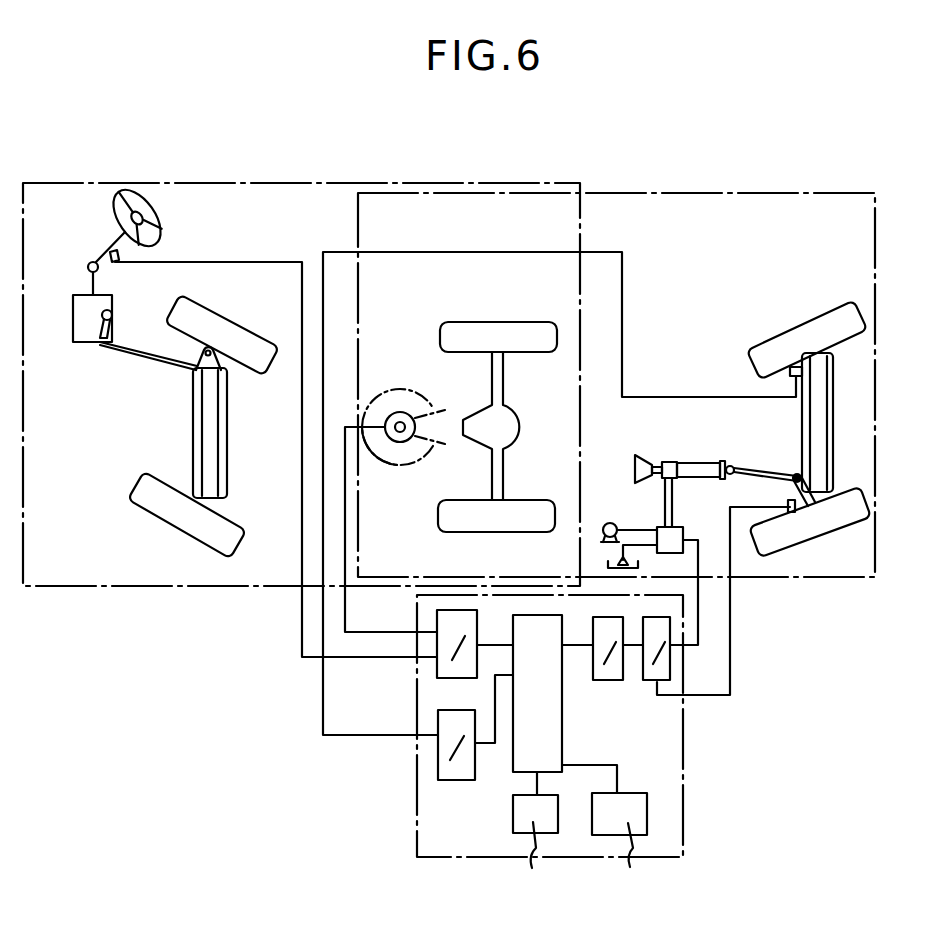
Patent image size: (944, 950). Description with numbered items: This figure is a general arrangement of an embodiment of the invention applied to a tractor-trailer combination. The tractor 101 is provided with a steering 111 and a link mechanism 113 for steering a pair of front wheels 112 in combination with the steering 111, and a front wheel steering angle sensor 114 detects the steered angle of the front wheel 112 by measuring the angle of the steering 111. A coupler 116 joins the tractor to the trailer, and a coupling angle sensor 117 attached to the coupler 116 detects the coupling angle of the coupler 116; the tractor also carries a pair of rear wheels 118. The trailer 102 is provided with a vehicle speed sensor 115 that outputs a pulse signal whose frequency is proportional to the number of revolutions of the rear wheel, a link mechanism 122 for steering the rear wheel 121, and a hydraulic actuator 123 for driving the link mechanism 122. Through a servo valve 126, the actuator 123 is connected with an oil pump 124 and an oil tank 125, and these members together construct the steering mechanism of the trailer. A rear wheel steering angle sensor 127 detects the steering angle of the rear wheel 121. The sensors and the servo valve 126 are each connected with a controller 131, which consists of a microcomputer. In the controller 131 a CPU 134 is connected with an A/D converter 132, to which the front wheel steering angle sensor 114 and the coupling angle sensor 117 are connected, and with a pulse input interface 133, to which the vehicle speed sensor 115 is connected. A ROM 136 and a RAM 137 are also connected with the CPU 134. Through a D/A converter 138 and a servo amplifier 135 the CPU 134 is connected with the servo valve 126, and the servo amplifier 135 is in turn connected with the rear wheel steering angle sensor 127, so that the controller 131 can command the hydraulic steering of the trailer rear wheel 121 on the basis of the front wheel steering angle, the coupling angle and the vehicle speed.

The tractor 101 is at (269, 183).
The trailer 102 is at (698, 193).
The steering 111 is at (125, 232).
The front wheels 112 is at (245, 335).
The link mechanism 113 is at (138, 355).
The front wheel steering angle sensor 114 is at (114, 262).
The vehicle speed sensor 115 is at (790, 372).
The coupler 116 is at (417, 395).
The coupling angle sensor 117 is at (397, 465).
The rear wheels 118 is at (518, 327).
The rear wheel 121 is at (802, 327).
The link mechanism 122 is at (834, 418).
The hydraulic actuator 123 is at (703, 462).
The oil pump 124 is at (610, 523).
The oil tank 125 is at (608, 567).
The servo valve 126 is at (680, 527).
The rear wheel steering angle sensor 127 is at (790, 502).
The controller 131 is at (683, 758).
The A/D converter 132 is at (437, 670).
The pulse input interface 133 is at (438, 770).
The CPU 134 is at (562, 740).
The servo amplifier 135 is at (647, 683).
The ROM 136 is at (513, 813).
The RAM 137 is at (647, 810).
The D/A converter 138 is at (610, 680).